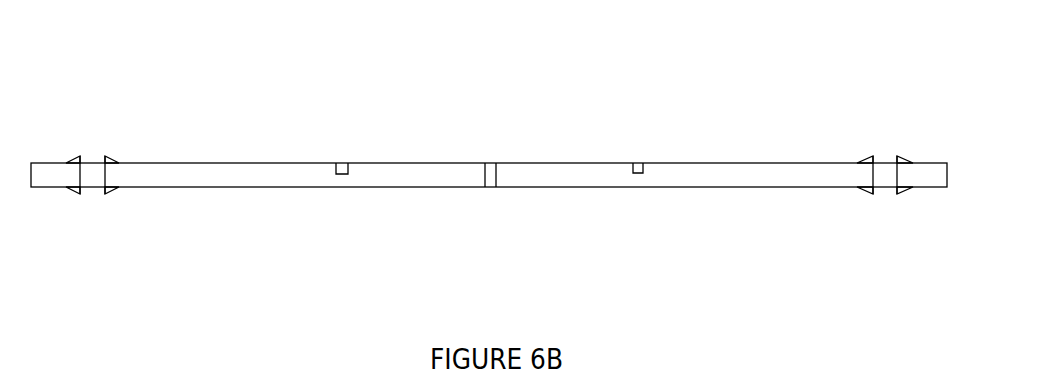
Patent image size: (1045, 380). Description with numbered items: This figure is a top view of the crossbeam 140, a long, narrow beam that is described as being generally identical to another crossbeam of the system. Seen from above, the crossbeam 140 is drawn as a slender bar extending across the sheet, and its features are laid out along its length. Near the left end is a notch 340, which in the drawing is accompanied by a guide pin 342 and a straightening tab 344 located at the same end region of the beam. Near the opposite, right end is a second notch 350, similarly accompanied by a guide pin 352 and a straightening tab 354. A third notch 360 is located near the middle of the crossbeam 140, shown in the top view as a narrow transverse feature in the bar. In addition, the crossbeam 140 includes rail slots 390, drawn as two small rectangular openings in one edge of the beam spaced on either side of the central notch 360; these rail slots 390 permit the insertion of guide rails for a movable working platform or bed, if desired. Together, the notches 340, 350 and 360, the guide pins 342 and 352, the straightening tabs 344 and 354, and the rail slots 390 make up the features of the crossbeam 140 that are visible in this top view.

The crossbeam 140 is at (280, 175).
The notch 340 is at (111, 158).
The guide pin 342 is at (93, 173).
The straightening tab 344 is at (105, 187).
The notch 350 is at (865, 174).
The guide pin 352 is at (884, 178).
The straightening tab 354 is at (868, 190).
The notch 360 is at (485, 167).
The rail slots 390 is at (489, 125).